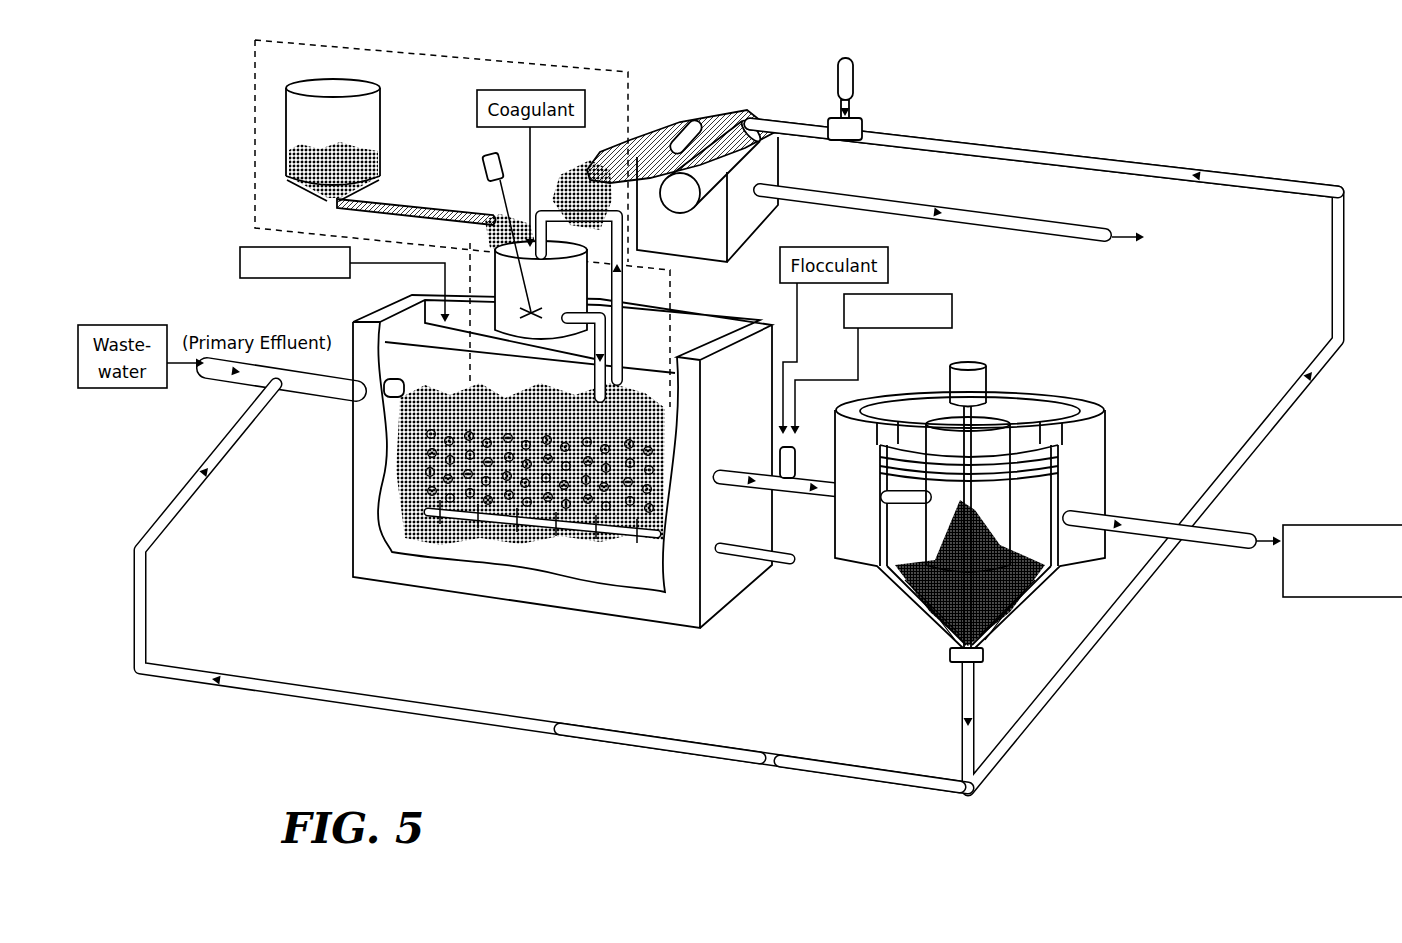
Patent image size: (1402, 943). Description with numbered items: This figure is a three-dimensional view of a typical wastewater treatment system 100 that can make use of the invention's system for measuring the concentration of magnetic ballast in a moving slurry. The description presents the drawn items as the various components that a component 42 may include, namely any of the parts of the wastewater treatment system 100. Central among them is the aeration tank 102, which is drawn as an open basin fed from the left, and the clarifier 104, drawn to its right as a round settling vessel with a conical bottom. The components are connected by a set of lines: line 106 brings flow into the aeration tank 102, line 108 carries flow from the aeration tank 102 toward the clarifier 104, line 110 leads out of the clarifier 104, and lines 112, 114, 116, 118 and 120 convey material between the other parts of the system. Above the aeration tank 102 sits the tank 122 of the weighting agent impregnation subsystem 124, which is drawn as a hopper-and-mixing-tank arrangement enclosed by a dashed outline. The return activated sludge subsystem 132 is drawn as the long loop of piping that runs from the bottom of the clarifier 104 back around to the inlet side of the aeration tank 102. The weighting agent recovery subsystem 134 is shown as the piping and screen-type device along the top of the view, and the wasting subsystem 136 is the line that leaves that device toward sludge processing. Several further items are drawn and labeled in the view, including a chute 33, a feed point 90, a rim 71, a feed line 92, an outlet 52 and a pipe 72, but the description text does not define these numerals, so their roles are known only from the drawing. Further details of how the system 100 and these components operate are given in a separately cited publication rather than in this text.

The wastewater treatment system 100 is at (1057, 50).
The weighting agent impregnation subsystem 124 is at (293, 66).
The ballast feed chute 33 is at (498, 238).
The coagulant feed line to aeration tank 90 is at (382, 264).
The tank 122 is at (572, 284).
The line 118 is at (618, 297).
The line 116 is at (608, 319).
The weighting agent recovery subsystem 134 is at (1192, 140).
The wasting subsystem 136 is at (961, 203).
The line 114 is at (1003, 226).
The clarifier rim 71 is at (1031, 388).
The coagulant feed line to clarifier inlet 92 is at (862, 354).
The component 42 is at (789, 450).
The clarifier 104 is at (1090, 473).
The line 110 is at (1153, 521).
The line 112 is at (1283, 400).
The line 106 is at (323, 396).
The line 108 is at (814, 500).
The secondary effluent outlet 52 is at (1221, 539).
The aeration tank 102 is at (677, 622).
The return activated sludge subsystem 132 is at (645, 768).
The return activated sludge pipe 72 is at (693, 758).
The line 120 is at (827, 773).